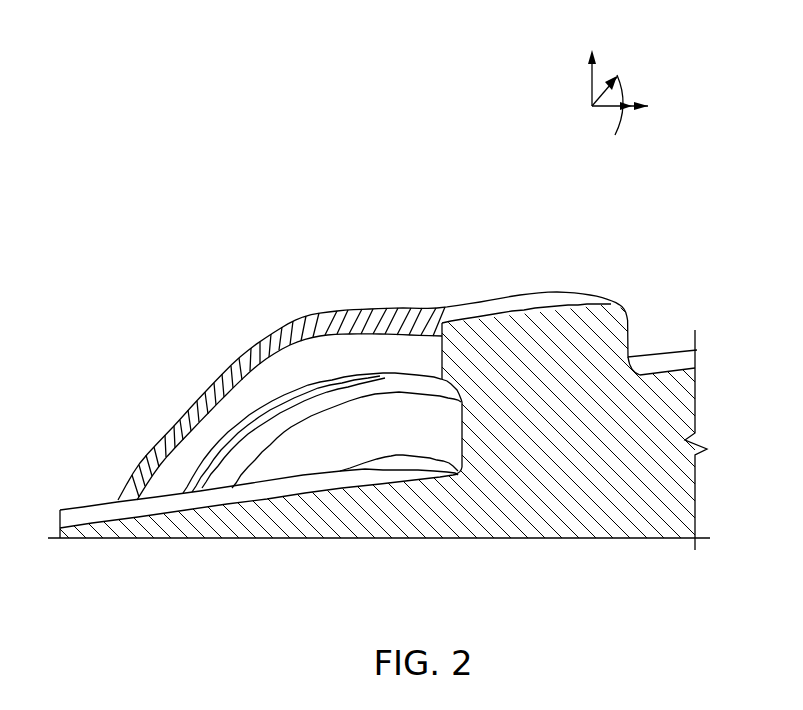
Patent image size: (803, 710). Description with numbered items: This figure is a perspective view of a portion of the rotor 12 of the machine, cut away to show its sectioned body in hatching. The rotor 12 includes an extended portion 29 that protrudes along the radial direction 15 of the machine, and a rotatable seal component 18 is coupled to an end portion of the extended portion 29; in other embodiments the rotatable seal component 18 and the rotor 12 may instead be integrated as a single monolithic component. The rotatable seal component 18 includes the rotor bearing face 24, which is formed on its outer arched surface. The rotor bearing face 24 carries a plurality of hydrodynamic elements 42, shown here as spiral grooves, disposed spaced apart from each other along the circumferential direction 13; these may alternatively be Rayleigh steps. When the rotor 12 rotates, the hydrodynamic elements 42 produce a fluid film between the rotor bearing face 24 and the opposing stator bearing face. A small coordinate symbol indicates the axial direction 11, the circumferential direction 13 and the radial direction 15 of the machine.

The axial direction 11 is at (641, 118).
The circumferential direction 13 is at (620, 78).
The radial direction 15 is at (578, 54).
The rotor 12 is at (543, 513).
The rotatable seal component 18 is at (633, 329).
The rotor bearing face 24 is at (310, 360).
The extended portion 29 is at (463, 427).
The hydrodynamic elements 42 is at (375, 322).